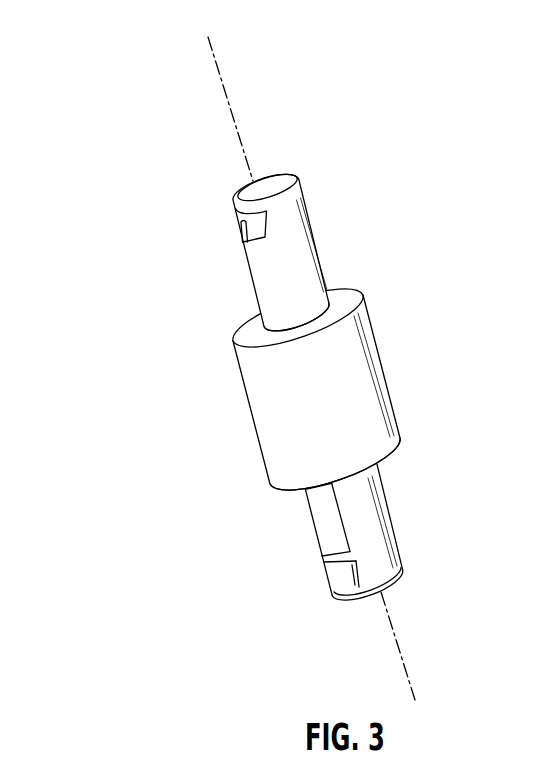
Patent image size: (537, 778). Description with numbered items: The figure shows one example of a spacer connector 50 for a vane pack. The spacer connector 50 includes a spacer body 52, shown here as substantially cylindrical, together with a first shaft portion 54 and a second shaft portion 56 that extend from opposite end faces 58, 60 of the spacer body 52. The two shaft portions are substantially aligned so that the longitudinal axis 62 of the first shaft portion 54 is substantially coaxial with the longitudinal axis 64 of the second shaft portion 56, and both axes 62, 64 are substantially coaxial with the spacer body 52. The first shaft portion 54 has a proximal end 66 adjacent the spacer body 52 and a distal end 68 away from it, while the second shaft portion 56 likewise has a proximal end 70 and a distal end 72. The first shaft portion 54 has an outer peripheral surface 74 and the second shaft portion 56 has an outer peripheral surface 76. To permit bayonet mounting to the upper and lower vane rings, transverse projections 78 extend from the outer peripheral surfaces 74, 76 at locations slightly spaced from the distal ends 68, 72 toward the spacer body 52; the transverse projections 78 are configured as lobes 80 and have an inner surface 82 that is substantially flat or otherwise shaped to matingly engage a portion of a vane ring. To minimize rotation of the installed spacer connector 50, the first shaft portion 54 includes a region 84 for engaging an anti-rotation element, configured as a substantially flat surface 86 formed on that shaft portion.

The spacer connector 50 is at (277, 389).
The spacer body 52 is at (366, 362).
The first shaft portion 54 is at (409, 500).
The second shaft portion 56 is at (328, 230).
The end face 58 is at (337, 296).
The end face 60 is at (382, 453).
The longitudinal axis 62 is at (408, 672).
The longitudinal axis 64 is at (216, 57).
The proximal end 66 is at (294, 496).
The distal end 68 is at (414, 585).
The proximal end 70 is at (249, 323).
The distal end 72 is at (218, 190).
The outer peripheral surface 74 is at (380, 492).
The outer peripheral surface 76 is at (320, 258).
The transverse projection 78 is at (305, 168).
The lobe 80 is at (238, 244).
The inner surface 82 is at (247, 246).
The region for engaging an anti-rotation element 84 is at (296, 529).
The flat surface 86 is at (320, 528).